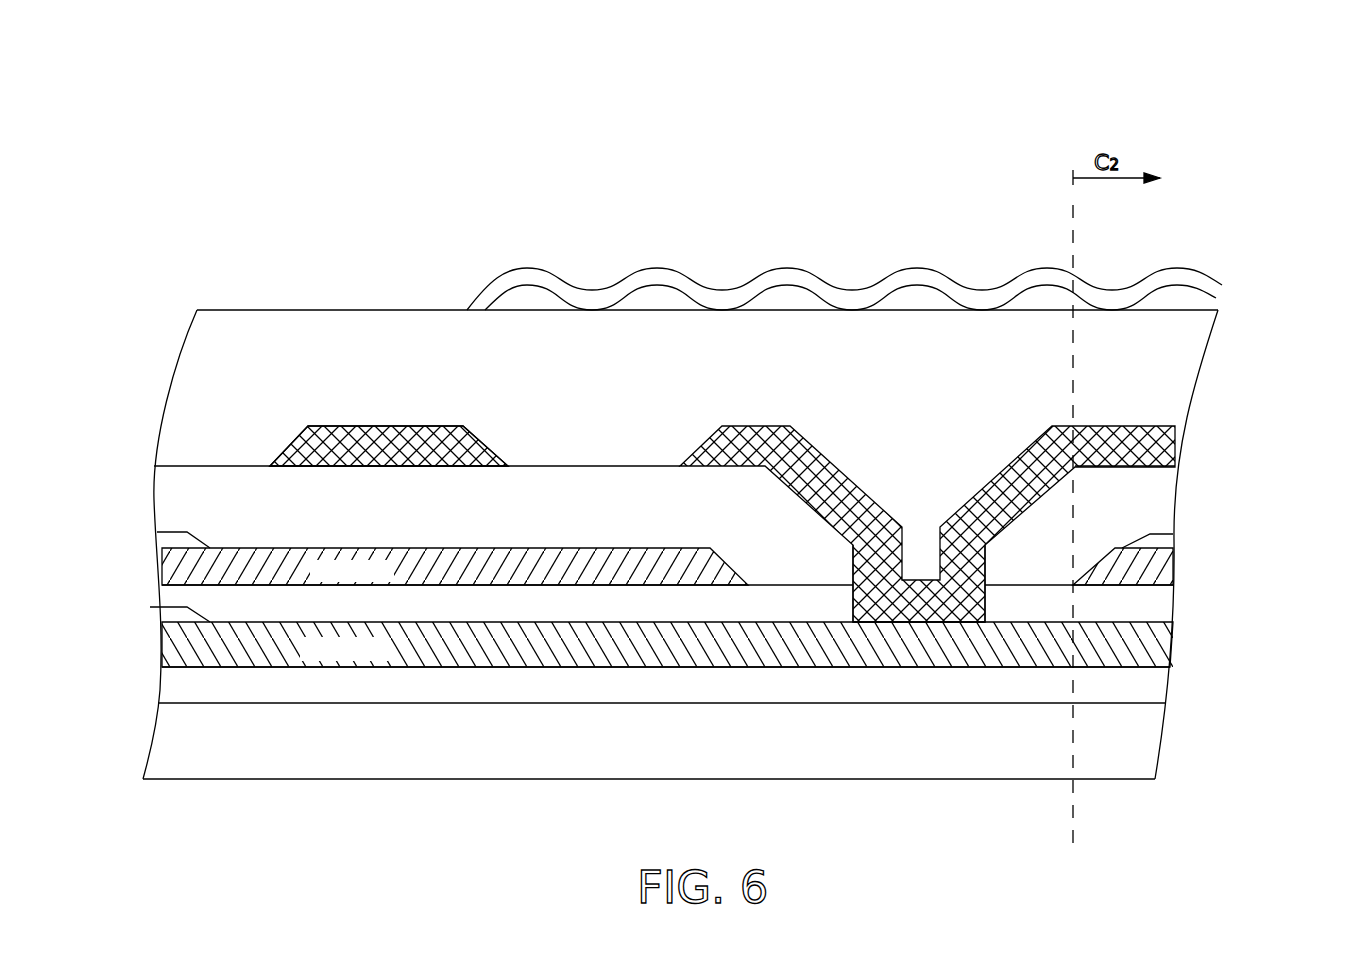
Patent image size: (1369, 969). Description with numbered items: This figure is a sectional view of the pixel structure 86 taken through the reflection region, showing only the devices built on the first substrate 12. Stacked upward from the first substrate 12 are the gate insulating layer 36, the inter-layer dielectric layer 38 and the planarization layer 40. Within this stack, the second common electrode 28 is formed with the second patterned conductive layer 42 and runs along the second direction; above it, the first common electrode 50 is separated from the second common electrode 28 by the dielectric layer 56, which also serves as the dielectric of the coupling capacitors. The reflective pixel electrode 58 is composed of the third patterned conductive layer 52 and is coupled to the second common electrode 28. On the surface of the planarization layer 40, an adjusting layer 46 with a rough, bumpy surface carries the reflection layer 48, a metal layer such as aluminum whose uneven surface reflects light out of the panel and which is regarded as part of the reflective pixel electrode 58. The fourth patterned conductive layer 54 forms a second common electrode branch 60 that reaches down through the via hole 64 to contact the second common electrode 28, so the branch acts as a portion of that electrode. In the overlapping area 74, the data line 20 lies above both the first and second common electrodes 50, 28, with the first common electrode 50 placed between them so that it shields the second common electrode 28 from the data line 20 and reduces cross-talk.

The first substrate 12 is at (1147, 747).
The data line 20 is at (358, 440).
The second common electrode 28 is at (1160, 645).
The gate insulating layer 36 is at (1155, 692).
The inter-layer dielectric layer 38 is at (1160, 505).
The planarization layer 40 is at (1167, 378).
The second patterned conductive layer 42 is at (152, 607).
The adjusting layer 46 is at (1177, 300).
The reflection layer 48 is at (1217, 293).
The first common electrode 50 is at (162, 570).
The third patterned conductive layer 52 is at (160, 532).
The fourth patterned conductive layer 54 is at (283, 451).
The dielectric layer 56 is at (1160, 612).
The reflective pixel electrode 58 is at (1160, 565).
The second common electrode branch 60 is at (997, 468).
The via hole 64 is at (847, 600).
The overlapping area 74 is at (506, 172).
The pixel structure 86 is at (1237, 137).